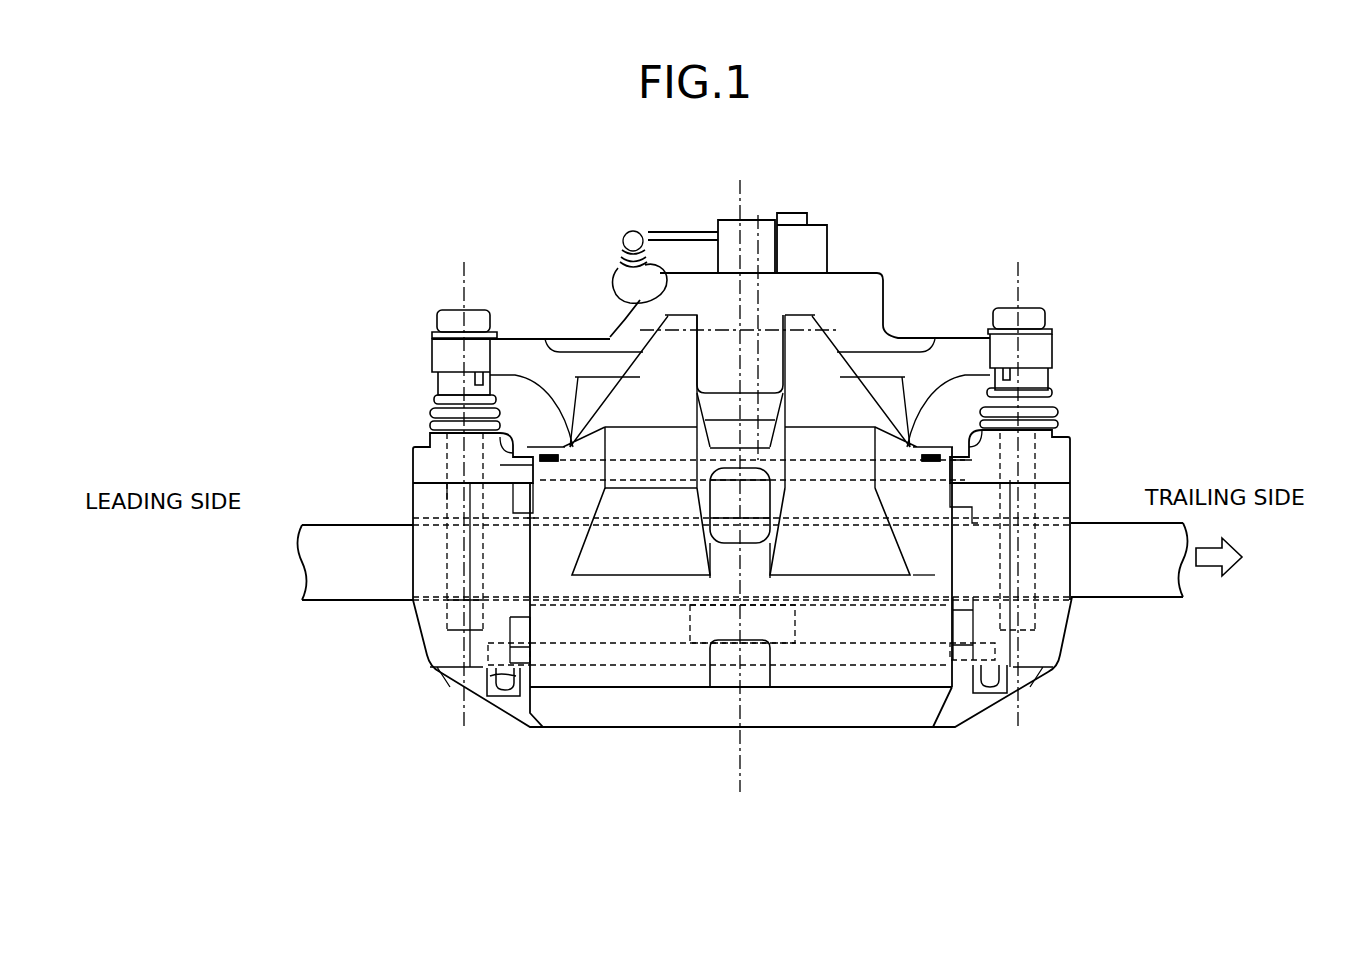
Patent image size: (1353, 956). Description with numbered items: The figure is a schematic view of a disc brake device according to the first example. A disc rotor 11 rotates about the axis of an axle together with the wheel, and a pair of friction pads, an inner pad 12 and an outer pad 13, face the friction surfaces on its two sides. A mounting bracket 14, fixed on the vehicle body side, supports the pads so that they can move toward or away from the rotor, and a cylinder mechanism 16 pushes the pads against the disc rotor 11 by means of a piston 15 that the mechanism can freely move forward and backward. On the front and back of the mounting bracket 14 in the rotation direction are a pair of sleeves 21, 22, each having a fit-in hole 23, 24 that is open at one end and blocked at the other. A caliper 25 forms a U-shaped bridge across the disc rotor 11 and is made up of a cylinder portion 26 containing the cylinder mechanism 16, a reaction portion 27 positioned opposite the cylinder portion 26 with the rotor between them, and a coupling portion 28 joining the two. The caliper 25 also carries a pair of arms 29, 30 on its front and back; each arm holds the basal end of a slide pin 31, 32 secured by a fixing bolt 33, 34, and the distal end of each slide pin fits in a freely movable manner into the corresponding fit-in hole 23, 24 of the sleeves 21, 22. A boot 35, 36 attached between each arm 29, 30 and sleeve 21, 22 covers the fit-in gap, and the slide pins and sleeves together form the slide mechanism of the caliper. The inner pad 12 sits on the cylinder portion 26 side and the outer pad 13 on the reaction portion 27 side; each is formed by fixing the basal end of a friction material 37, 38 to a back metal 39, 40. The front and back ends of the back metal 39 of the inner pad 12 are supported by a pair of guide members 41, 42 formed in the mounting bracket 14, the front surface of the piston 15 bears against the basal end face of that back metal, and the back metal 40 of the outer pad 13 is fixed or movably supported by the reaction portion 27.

The disc rotor 11 is at (330, 574).
The inner pad 12 is at (520, 603).
The outer pad 13 is at (467, 607).
The mounting bracket 14 is at (978, 724).
The piston 15 is at (863, 312).
The cylinder mechanism 16 is at (848, 268).
The sleeve 21 is at (1063, 466).
The sleeve 22 is at (430, 440).
The fit-in hole 23 is at (1035, 615).
The fit-in hole 24 is at (450, 635).
The caliper 25 is at (522, 704).
The cylinder portion 26 is at (688, 297).
The reaction portion 27 is at (877, 707).
The coupling portion 28 is at (930, 560).
The arm 29 is at (1043, 350).
The arm 30 is at (438, 352).
The slide pin 31 is at (1030, 443).
The slide pin 32 is at (453, 503).
The fixing bolt 33 is at (1032, 318).
The fixing bolt 34 is at (446, 323).
The boot 35 is at (1048, 412).
The boot 36 is at (435, 399).
The friction material 37 is at (643, 580).
The friction material 38 is at (843, 630).
The back metal 39 is at (627, 470).
The back metal 40 is at (678, 657).
The guide member 41 is at (957, 465).
The guide member 42 is at (520, 465).